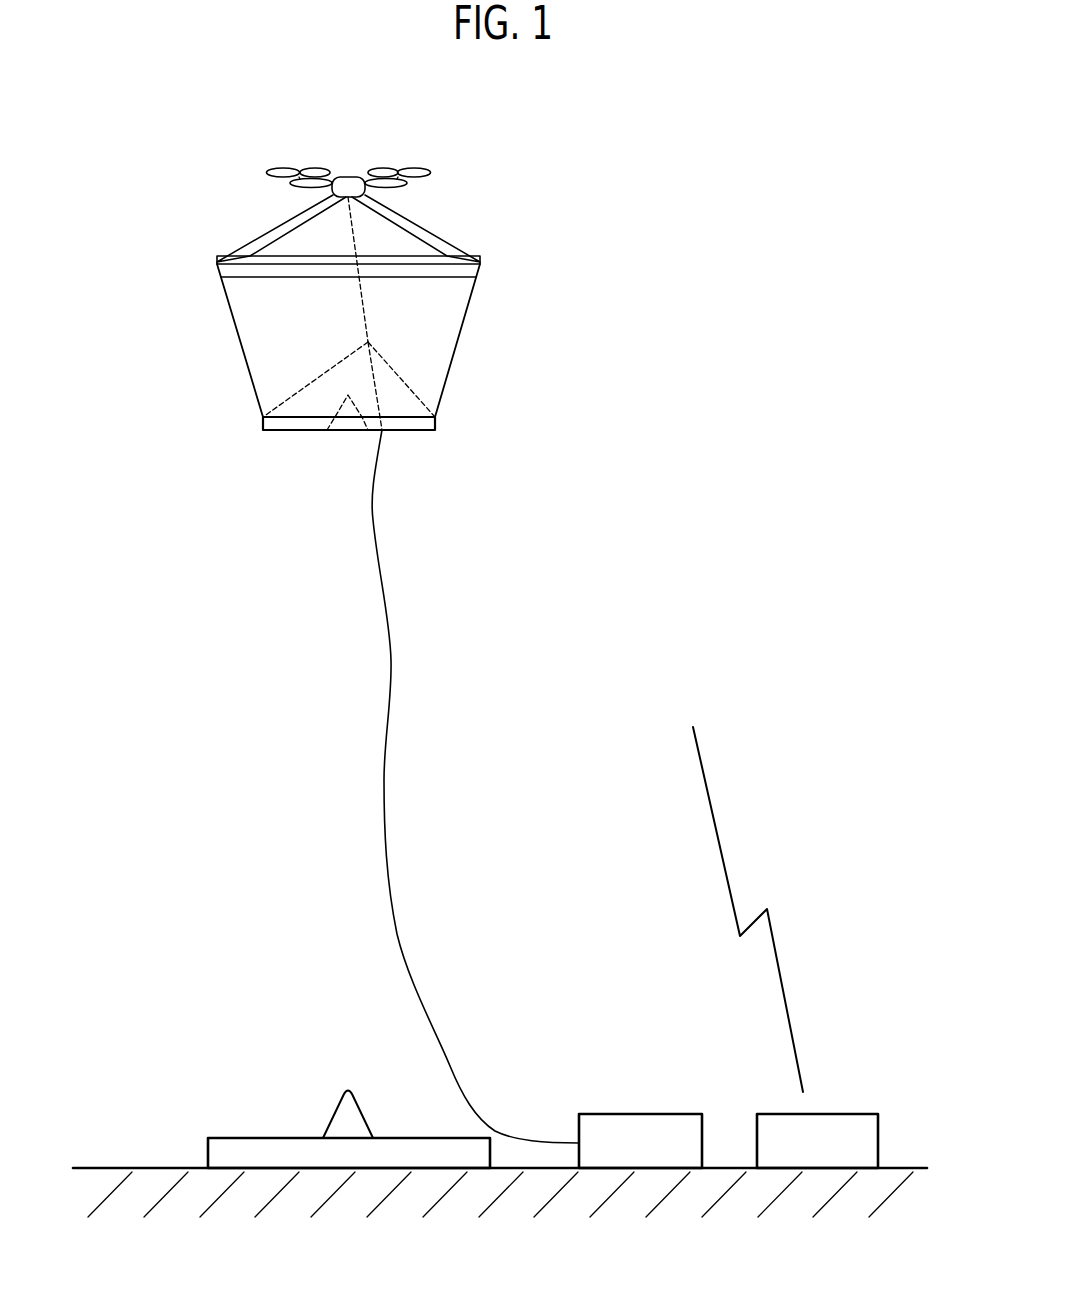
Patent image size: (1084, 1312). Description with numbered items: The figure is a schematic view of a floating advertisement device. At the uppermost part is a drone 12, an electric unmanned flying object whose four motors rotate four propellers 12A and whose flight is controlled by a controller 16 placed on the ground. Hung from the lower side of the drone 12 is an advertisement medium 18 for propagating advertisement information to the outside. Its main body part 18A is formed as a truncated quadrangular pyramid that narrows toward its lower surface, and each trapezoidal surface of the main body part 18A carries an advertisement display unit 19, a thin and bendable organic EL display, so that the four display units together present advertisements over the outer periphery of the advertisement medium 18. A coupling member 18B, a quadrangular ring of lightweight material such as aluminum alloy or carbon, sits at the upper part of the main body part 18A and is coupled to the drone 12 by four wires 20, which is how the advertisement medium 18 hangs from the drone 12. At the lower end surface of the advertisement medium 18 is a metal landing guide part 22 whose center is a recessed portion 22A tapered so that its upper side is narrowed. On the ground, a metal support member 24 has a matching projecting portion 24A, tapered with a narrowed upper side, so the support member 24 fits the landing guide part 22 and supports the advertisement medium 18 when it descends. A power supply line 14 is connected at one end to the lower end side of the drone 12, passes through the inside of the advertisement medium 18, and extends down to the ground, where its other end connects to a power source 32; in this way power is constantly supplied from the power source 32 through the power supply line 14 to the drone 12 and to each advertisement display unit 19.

The drone 12 is at (352, 177).
The propeller 12A is at (282, 167).
The power supply line 14 is at (312, 382).
The controller 16 is at (828, 1114).
The advertisement medium 18 is at (345, 384).
The main body part 18A is at (473, 303).
The coupling member 18B is at (218, 264).
The advertisement display unit 19 is at (435, 330).
The wire 20 is at (282, 226).
The landing guide part 22 is at (273, 431).
The recessed portion 22A is at (348, 428).
The support member 24 is at (227, 1138).
The projecting portion 24A is at (337, 1108).
The power source 32 is at (642, 1114).